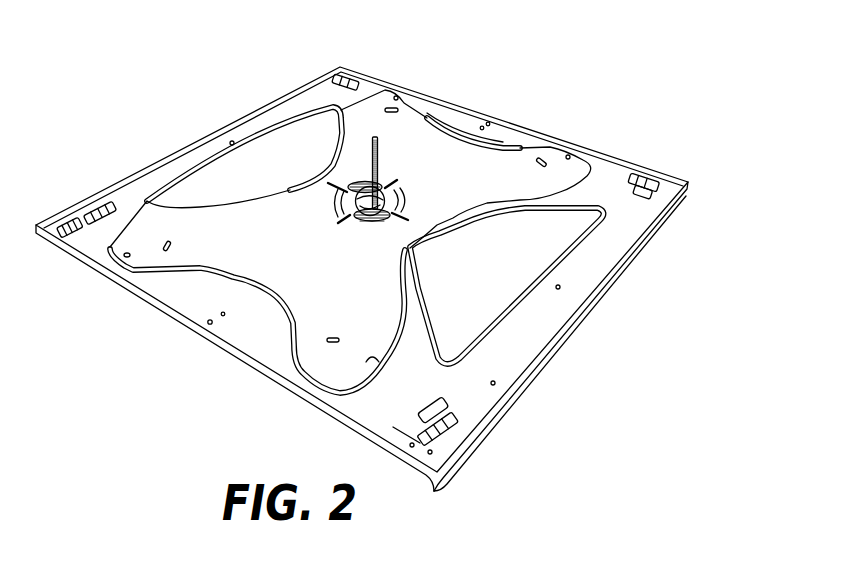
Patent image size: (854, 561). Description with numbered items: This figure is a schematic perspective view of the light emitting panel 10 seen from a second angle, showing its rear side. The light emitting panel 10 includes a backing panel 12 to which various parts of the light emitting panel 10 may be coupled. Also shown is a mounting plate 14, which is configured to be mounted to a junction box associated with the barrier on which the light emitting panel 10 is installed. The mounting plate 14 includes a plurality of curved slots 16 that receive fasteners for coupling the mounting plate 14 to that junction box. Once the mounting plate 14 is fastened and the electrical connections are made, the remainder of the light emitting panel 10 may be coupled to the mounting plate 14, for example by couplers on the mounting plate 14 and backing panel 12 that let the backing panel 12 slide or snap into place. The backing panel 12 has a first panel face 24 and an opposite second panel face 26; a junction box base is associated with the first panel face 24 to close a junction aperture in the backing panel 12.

The light emitting panel 10 is at (622, 80).
The backing panel 12 is at (622, 234).
The mounting plate 14 is at (204, 257).
The curved slots 16 is at (400, 206).
The first panel face 24 is at (535, 330).
The second panel face 26 is at (494, 414).